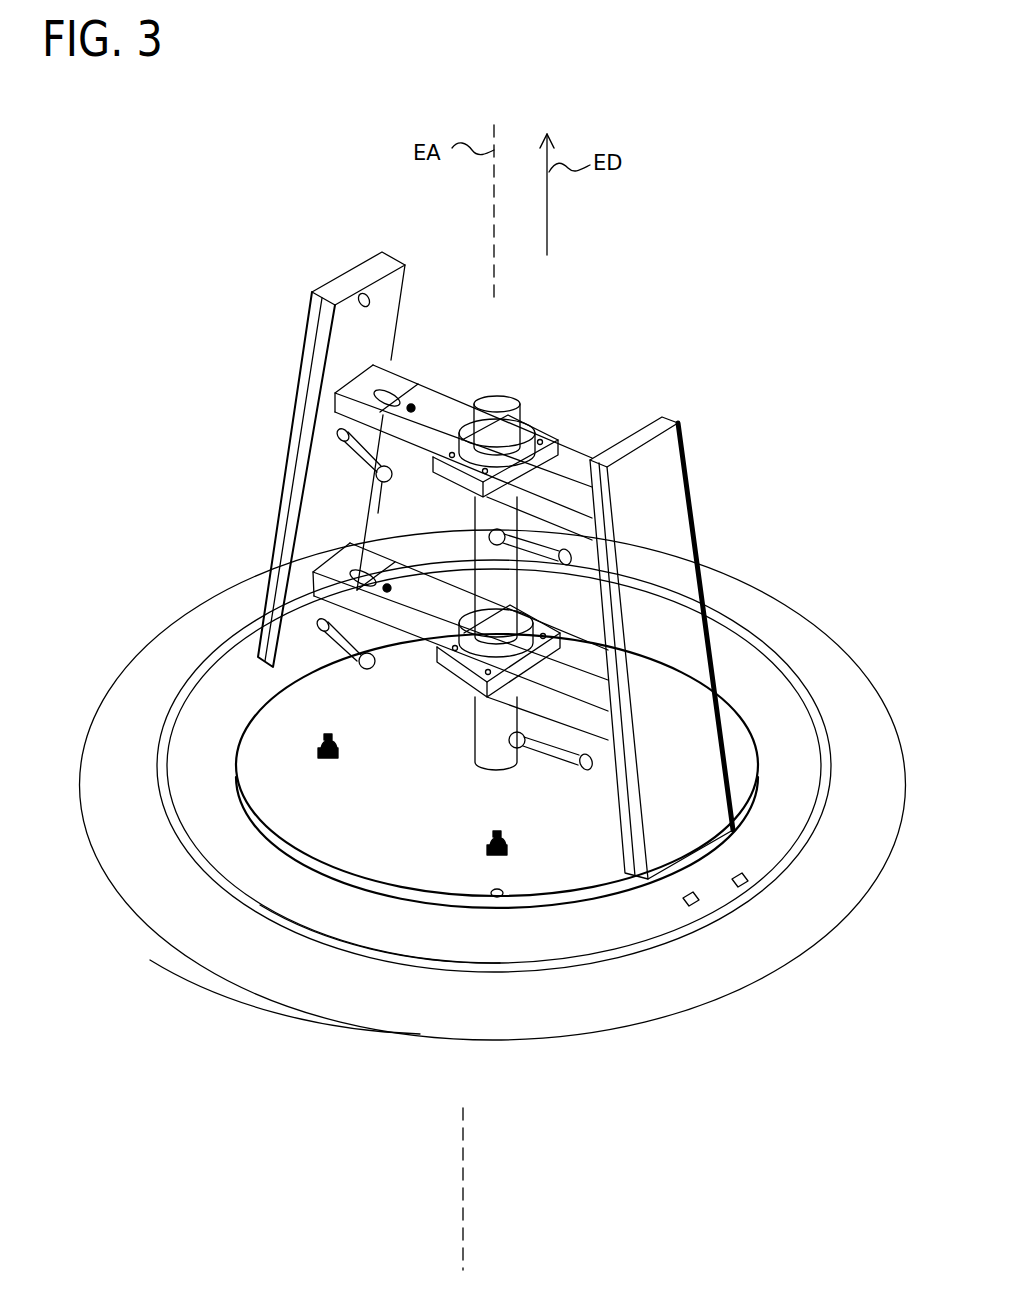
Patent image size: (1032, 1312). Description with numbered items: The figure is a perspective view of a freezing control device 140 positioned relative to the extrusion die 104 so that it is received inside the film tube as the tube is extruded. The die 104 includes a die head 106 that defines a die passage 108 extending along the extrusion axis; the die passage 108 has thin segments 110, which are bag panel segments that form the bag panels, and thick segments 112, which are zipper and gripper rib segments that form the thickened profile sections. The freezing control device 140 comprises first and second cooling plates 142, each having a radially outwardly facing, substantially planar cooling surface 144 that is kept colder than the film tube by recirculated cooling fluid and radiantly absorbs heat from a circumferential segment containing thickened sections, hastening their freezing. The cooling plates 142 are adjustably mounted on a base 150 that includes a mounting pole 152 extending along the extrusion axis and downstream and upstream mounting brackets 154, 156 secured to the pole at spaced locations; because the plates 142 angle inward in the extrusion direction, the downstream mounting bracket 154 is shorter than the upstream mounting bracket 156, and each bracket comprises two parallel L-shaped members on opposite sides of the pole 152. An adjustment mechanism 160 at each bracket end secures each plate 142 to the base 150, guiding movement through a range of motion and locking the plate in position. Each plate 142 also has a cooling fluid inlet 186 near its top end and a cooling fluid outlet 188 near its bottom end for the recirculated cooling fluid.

The tubular die 104 is at (724, 1005).
The die head 106 is at (247, 977).
The die passage 108 is at (199, 879).
The thin segments 110 is at (393, 960).
The thick segments 112 is at (693, 907).
The freezing control device 140 is at (724, 347).
The cooling plate 142 is at (291, 363).
The cooling surface 144 is at (345, 280).
The base 150 is at (534, 406).
The mounting pole 152 is at (495, 392).
The downstream mounting bracket 154 is at (438, 372).
The upstream mounting bracket 156 is at (423, 657).
The adjustment mechanism 160 is at (411, 374).
The cooling fluid inlet 186 is at (369, 293).
The cooling fluid outlet 188 is at (337, 641).